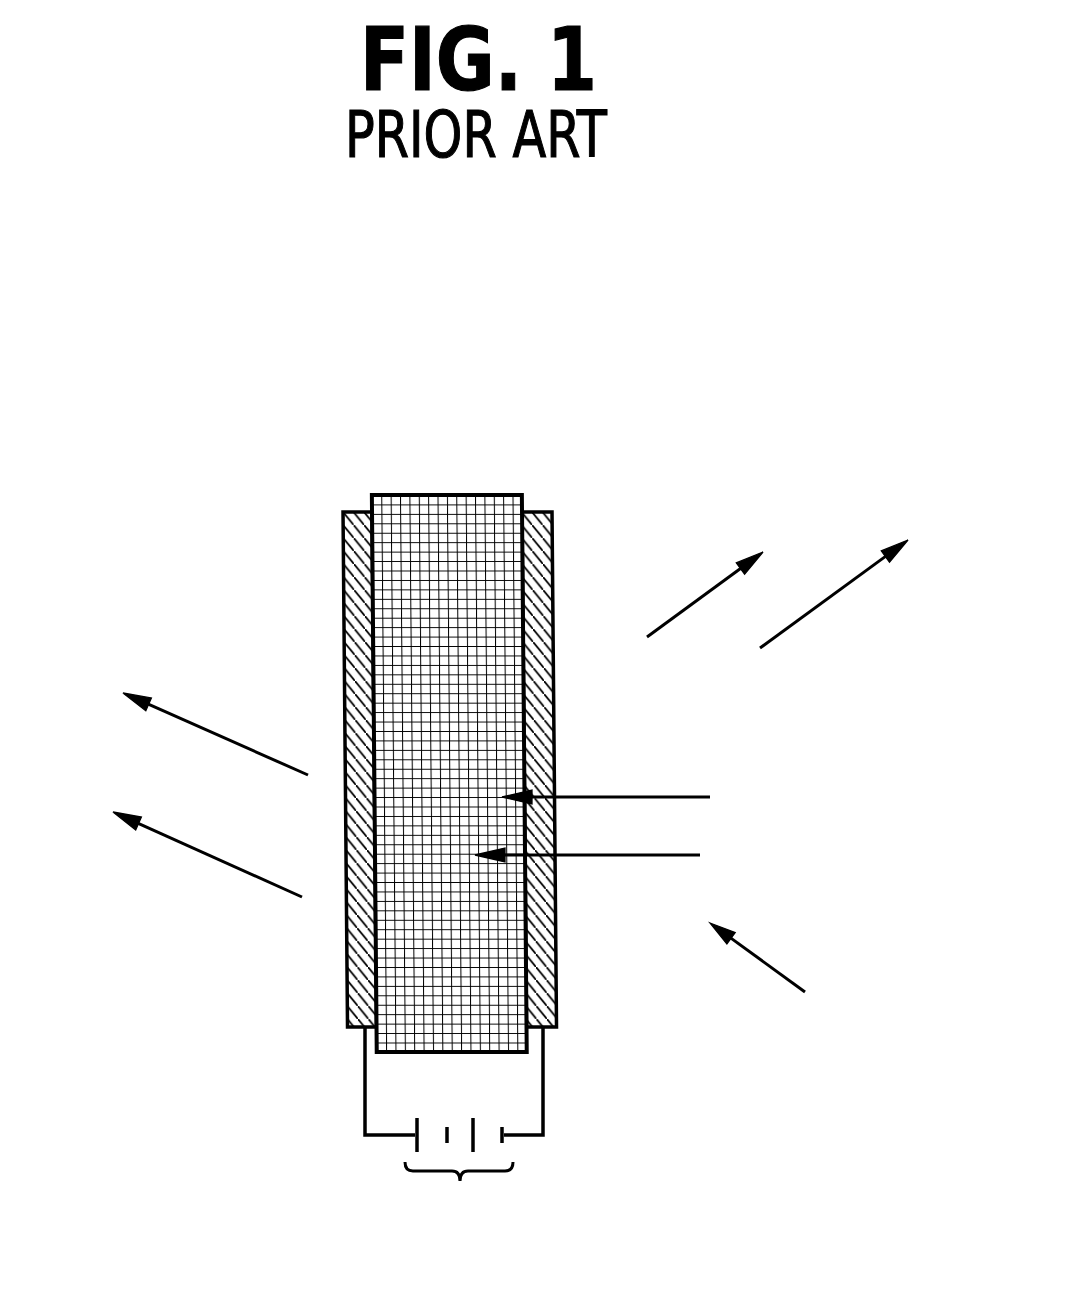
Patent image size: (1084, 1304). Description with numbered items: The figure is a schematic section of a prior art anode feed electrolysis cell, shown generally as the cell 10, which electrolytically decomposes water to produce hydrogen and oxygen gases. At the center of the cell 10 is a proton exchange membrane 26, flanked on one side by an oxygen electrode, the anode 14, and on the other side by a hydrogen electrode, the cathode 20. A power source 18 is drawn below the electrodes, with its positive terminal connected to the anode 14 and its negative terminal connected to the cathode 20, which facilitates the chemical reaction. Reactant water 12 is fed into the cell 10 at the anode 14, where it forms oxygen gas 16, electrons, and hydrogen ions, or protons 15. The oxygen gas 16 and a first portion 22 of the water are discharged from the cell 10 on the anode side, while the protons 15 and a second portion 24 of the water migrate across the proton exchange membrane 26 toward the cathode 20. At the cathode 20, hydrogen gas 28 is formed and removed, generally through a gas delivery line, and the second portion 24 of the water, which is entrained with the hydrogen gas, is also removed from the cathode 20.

The cell 10 is at (548, 418).
The reactant water 12 is at (763, 962).
The oxygen electrode (anode) 14 is at (540, 511).
The hydrogen ions (protons) 15 is at (680, 792).
The oxygen gas 16 is at (705, 598).
The power source 18 is at (454, 1133).
The hydrogen electrode (cathode) 20 is at (358, 512).
The first portion of water 22 is at (823, 605).
The second portion of water 24 is at (233, 867).
The proton exchange membrane 26 is at (460, 496).
The hydrogen gas 28 is at (215, 735).